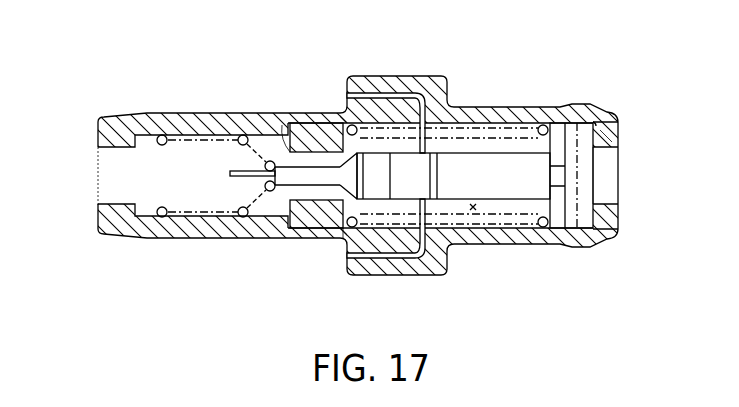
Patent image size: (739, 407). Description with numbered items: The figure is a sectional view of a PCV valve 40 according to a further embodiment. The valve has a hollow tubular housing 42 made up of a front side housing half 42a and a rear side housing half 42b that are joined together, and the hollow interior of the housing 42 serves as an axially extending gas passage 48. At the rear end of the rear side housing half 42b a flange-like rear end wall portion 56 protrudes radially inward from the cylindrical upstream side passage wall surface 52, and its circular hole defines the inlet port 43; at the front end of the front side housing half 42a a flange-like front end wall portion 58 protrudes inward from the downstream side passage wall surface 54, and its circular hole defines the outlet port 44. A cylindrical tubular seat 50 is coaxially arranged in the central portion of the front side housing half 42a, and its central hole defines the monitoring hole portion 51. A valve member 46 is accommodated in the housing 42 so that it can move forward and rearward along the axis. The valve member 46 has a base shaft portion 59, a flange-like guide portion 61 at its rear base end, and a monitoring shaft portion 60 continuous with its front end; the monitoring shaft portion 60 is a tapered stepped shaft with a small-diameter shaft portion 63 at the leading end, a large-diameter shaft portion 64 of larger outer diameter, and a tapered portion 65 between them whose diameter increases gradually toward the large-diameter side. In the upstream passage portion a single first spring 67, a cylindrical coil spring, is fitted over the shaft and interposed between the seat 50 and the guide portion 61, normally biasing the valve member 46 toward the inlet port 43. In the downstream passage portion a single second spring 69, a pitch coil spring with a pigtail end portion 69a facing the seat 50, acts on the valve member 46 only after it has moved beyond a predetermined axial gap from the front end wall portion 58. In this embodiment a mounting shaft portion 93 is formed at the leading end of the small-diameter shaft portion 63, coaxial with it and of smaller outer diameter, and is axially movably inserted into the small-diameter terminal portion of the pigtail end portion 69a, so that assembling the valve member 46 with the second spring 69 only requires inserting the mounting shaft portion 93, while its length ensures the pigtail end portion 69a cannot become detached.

The PCV valve 40 is at (451, 68).
The housing 42 is at (387, 74).
The front side housing half 42a is at (215, 113).
The rear side housing half 42b is at (538, 112).
The inlet port 43 is at (608, 180).
The outlet port 44 is at (100, 178).
The valve member 46 is at (488, 150).
The gas passage 48 is at (473, 212).
The seat 50 is at (320, 127).
The monitoring hole portion 51 is at (289, 150).
The upstream side passage wall surface 52 is at (591, 127).
The downstream side passage wall surface 54 is at (195, 216).
The rear end wall portion 56 is at (610, 138).
The front end wall portion 58 is at (100, 132).
The base shaft portion 59 is at (511, 201).
The monitoring shaft portion 60 is at (372, 202).
The guide portion 61 is at (557, 230).
The small-diameter shaft portion 63 is at (312, 186).
The large-diameter shaft portion 64 is at (408, 155).
The tapered portion 65 is at (349, 165).
The first spring 67 is at (347, 230).
The second spring 69 is at (158, 217).
The pigtail end portion 69a is at (262, 213).
The mounting shaft portion 93 is at (232, 177).